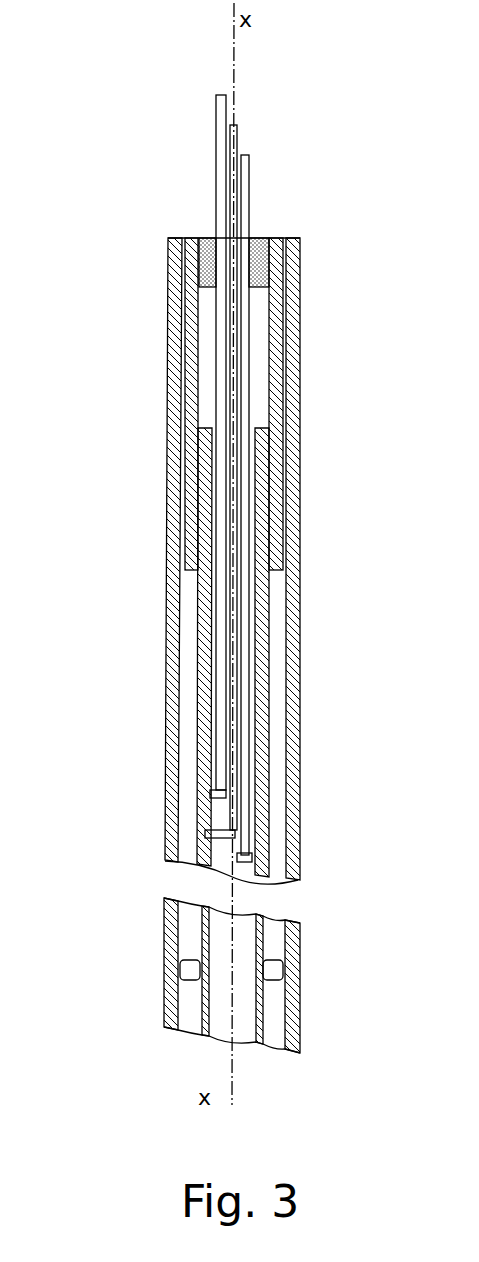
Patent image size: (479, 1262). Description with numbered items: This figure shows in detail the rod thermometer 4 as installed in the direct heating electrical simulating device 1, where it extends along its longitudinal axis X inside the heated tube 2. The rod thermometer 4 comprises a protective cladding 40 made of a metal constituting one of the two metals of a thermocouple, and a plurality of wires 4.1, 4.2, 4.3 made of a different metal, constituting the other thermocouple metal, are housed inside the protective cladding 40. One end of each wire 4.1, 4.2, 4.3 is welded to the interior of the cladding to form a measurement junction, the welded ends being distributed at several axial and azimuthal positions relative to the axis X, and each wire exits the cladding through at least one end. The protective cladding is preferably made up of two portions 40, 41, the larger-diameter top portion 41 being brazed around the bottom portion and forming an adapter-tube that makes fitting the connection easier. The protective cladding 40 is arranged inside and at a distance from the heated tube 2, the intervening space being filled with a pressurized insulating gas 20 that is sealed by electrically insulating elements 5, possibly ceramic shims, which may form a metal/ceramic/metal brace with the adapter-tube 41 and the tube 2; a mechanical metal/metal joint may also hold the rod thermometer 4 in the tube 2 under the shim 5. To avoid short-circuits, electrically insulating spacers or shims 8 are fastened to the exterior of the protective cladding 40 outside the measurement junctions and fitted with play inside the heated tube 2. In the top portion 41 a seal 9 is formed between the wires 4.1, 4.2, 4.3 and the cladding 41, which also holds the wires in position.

The direct heating electrical simulating device 1 is at (70, 746).
The heated tube 2 is at (290, 778).
The rod thermometer 4 is at (276, 667).
The wire 4.1 is at (250, 160).
The wire 4.2 is at (238, 130).
The wire 4.3 is at (216, 100).
The electrically insulating element 5 is at (178, 238).
The spacers or shims 8 is at (280, 969).
The seal 9 is at (288, 238).
The pressurized insulating gas 20 is at (192, 677).
The protective cladding 40 is at (296, 856).
The top portion (adapter-tube) 41 is at (285, 377).